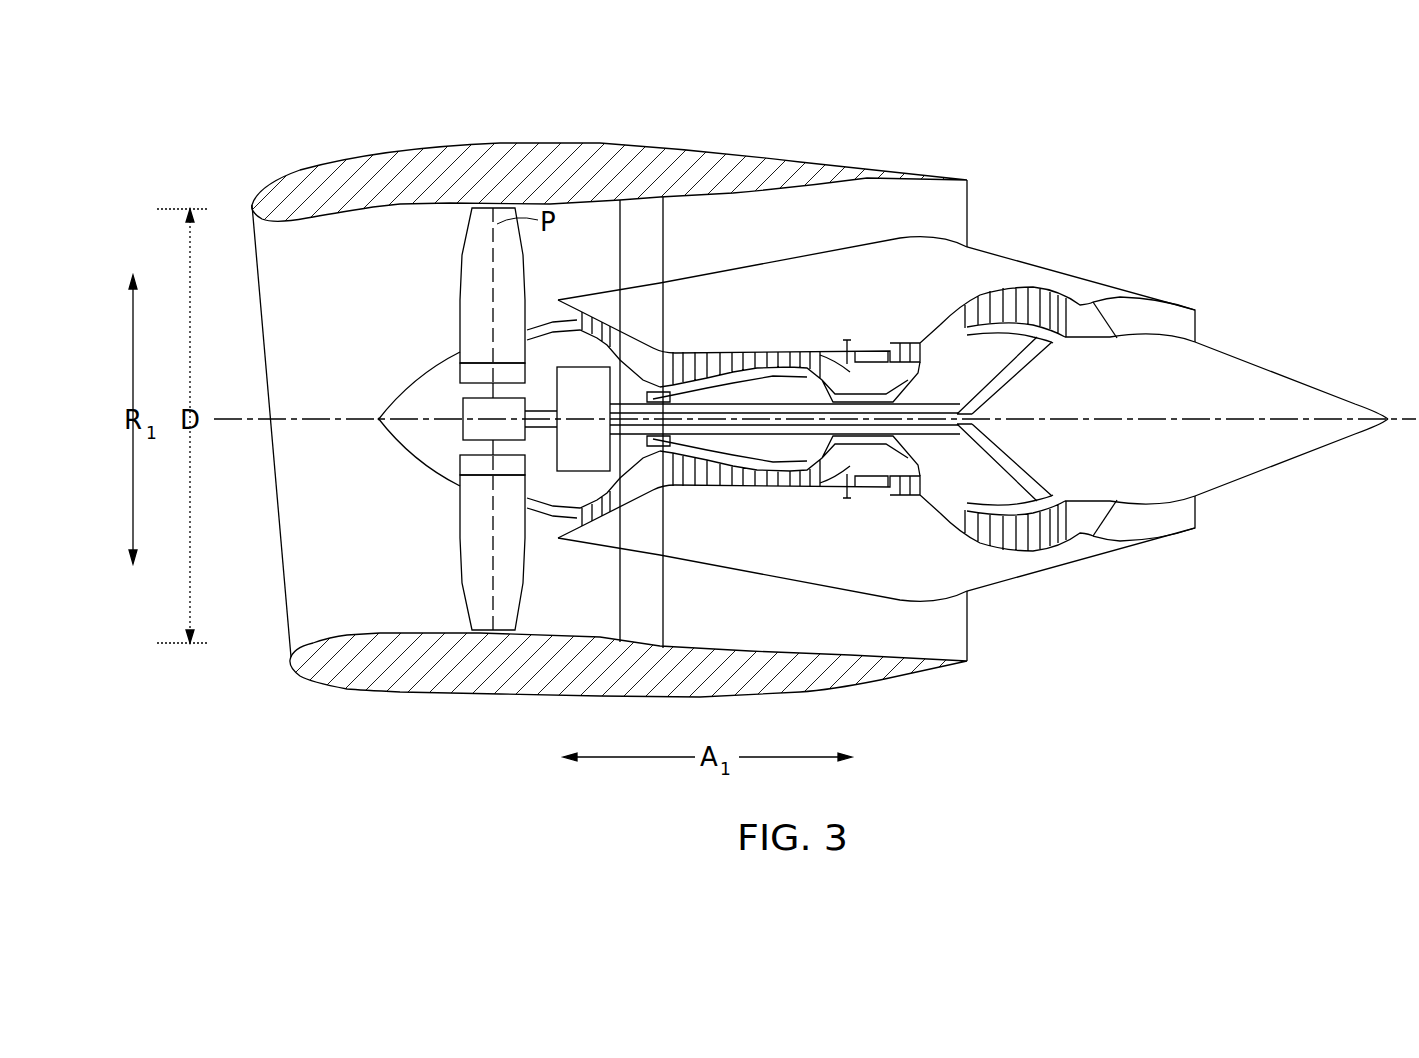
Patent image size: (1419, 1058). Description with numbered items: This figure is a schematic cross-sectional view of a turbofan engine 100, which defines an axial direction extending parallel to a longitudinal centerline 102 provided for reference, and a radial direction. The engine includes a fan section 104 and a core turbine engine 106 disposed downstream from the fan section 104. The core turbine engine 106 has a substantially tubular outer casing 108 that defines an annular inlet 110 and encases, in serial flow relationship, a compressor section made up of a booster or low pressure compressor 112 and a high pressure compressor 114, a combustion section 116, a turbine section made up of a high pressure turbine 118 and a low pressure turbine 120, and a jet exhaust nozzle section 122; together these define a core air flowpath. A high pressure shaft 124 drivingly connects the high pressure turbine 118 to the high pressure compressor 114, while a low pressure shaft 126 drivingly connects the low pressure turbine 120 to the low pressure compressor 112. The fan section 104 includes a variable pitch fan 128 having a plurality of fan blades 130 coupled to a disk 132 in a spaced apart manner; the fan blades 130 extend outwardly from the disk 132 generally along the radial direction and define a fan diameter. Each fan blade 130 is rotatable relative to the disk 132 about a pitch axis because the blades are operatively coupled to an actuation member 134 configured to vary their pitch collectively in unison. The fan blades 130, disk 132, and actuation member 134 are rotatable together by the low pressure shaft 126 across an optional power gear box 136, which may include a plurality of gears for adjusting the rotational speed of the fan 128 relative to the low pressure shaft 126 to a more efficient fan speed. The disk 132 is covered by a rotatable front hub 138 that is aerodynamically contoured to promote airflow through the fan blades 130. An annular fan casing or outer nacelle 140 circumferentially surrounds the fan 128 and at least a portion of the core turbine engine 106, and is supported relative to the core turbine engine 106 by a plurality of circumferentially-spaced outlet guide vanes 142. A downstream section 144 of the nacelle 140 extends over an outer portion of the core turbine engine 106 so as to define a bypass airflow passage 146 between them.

The turbofan engine 100 is at (1112, 155).
The longitudinal centerline 102 is at (1152, 412).
The fan section 104 is at (374, 241).
The core turbine engine 106 is at (788, 305).
The outer casing 108 is at (832, 594).
The annular inlet 110 is at (560, 528).
The low pressure compressor 112 is at (617, 503).
The high pressure compressor 114 is at (692, 483).
The combustion section 116 is at (862, 485).
The high pressure turbine 118 is at (930, 493).
The low pressure turbine 120 is at (1057, 548).
The jet exhaust nozzle section 122 is at (1115, 525).
The high pressure shaft 124 is at (862, 388).
The low pressure shaft 126 is at (975, 410).
The variable pitch fan 128 is at (408, 419).
The fan blades 130 is at (458, 585).
The disk 132 is at (488, 374).
The actuation member 134 is at (470, 410).
The power gear box 136 is at (600, 388).
The front hub 138 is at (392, 443).
The outer nacelle 140 is at (509, 697).
The outlet guide vanes 142 is at (663, 225).
The downstream section 144 is at (883, 165).
The bypass airflow passage 146 is at (857, 236).